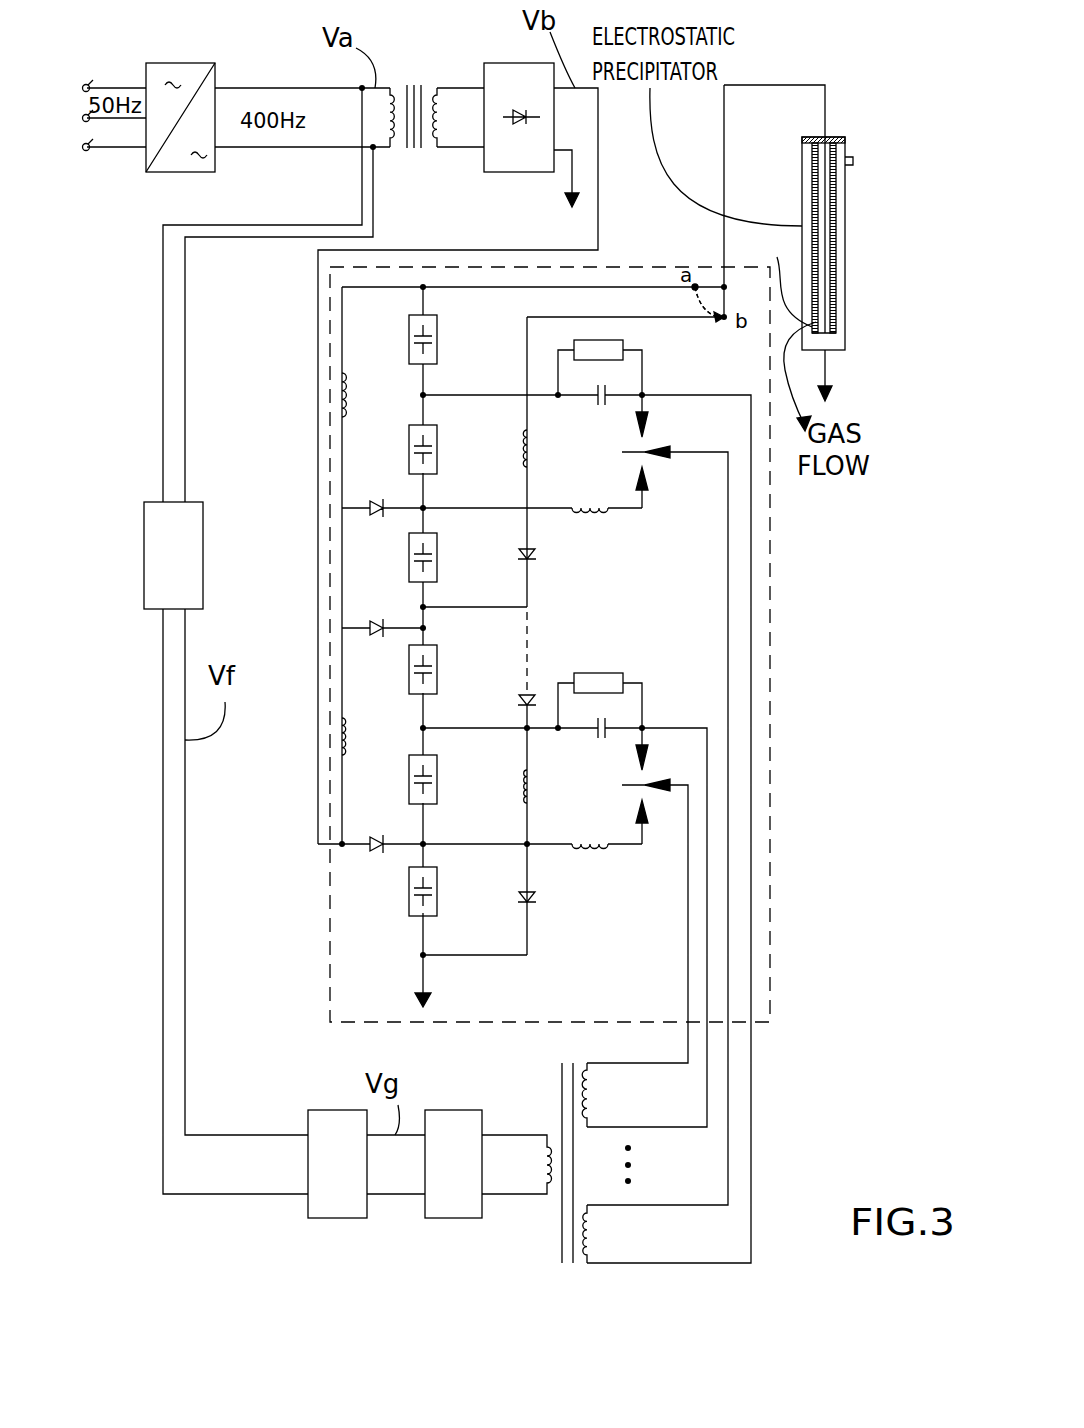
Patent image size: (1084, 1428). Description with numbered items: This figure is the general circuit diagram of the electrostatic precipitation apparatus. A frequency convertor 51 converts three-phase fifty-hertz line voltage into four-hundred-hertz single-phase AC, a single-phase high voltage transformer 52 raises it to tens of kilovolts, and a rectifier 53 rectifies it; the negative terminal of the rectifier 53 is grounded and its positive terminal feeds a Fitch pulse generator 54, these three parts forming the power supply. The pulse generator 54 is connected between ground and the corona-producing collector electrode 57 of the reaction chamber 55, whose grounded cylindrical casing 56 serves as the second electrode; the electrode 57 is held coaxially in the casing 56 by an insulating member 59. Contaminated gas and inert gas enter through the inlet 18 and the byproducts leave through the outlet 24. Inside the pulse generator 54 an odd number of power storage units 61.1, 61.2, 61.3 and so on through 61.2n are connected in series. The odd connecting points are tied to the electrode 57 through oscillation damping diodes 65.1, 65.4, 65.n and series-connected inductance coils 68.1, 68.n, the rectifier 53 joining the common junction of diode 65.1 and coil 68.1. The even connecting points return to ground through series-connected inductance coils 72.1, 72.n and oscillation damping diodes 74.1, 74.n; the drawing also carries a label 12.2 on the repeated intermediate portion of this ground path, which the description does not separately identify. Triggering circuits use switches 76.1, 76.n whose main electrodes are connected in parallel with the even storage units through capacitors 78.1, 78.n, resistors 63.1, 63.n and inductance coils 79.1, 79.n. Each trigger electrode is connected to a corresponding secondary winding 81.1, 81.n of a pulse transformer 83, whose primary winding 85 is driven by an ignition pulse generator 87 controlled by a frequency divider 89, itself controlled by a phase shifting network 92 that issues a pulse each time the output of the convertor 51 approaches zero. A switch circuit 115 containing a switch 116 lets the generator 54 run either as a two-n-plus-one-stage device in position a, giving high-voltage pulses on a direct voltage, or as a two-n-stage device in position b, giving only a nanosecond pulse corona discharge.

The frequency convertor 51 is at (180, 63).
The single-phase high voltage transformer 52 is at (407, 85).
The rectifier 53 is at (530, 172).
The Fitch pulse generator 54 is at (330, 975).
The reaction chamber 55 is at (833, 137).
The grounded cylindrical casing 56 is at (845, 320).
The corona-producing collector electrode 57 is at (812, 176).
The insulating member 59 is at (814, 137).
The inlet 18 is at (850, 163).
The outlet 24 is at (783, 276).
The switch 116 is at (681, 266).
The switch circuit 115 is at (662, 318).
The phase shifting network 92 is at (153, 502).
The frequency divider 89 is at (338, 1218).
The ignition pulse generator 87 is at (455, 1218).
The primary winding 85 is at (545, 1177).
The pulse transformer 83 is at (560, 1063).
The secondary winding 81.1 is at (592, 1095).
The secondary winding 81.n is at (592, 1232).
The power storage unit 61.2n is at (437, 452).
The power storage unit 61.3 is at (437, 672).
The power storage unit 61.2 is at (437, 782).
The power storage unit 61.1 is at (437, 893).
The oscillation damping diode 65.n is at (375, 500).
The oscillation damping diode 65.4 is at (375, 617).
The oscillation damping diode 65.1 is at (375, 835).
The inductance coil 68.n is at (349, 392).
The inductance coil 68.1 is at (349, 735).
The inductance coil 72.n is at (533, 467).
The inductance coil 72.1 is at (533, 800).
The oscillation damping diode 74.n is at (540, 548).
The oscillation damping diode 74.1 is at (540, 893).
The diode 12.2 is at (527, 693).
The resistor 63.n is at (612, 340).
The resistor 63.1 is at (612, 673).
The capacitor 78.n is at (605, 410).
The capacitor 78.1 is at (605, 743).
The switch 76.n is at (643, 447).
The switch 76.1 is at (643, 778).
The inductance coil 79.n is at (572, 505).
The inductance coil 79.1 is at (595, 852).